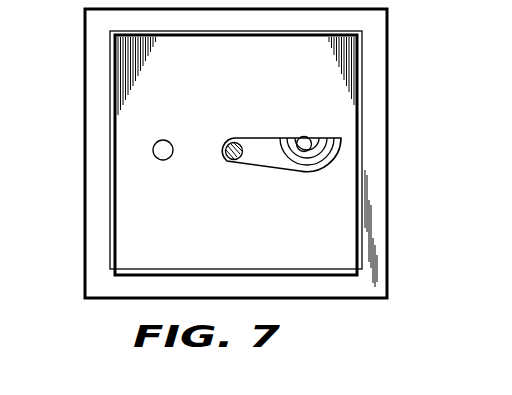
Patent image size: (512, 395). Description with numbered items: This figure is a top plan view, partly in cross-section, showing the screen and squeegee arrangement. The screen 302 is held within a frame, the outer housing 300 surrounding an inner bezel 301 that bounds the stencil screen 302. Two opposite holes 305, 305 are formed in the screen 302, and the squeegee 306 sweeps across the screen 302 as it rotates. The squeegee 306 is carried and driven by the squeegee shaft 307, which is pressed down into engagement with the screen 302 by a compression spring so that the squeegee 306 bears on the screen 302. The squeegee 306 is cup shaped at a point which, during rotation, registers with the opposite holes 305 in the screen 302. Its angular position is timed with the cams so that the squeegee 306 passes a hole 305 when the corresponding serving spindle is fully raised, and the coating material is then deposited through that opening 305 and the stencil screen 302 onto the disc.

The housing 300 is at (378, 97).
The bezel frame 301 is at (357, 62).
The screen 302 is at (181, 68).
The holes 305 is at (303, 141).
The squeegee 306 is at (254, 143).
The squeegee shaft 307 is at (232, 143).